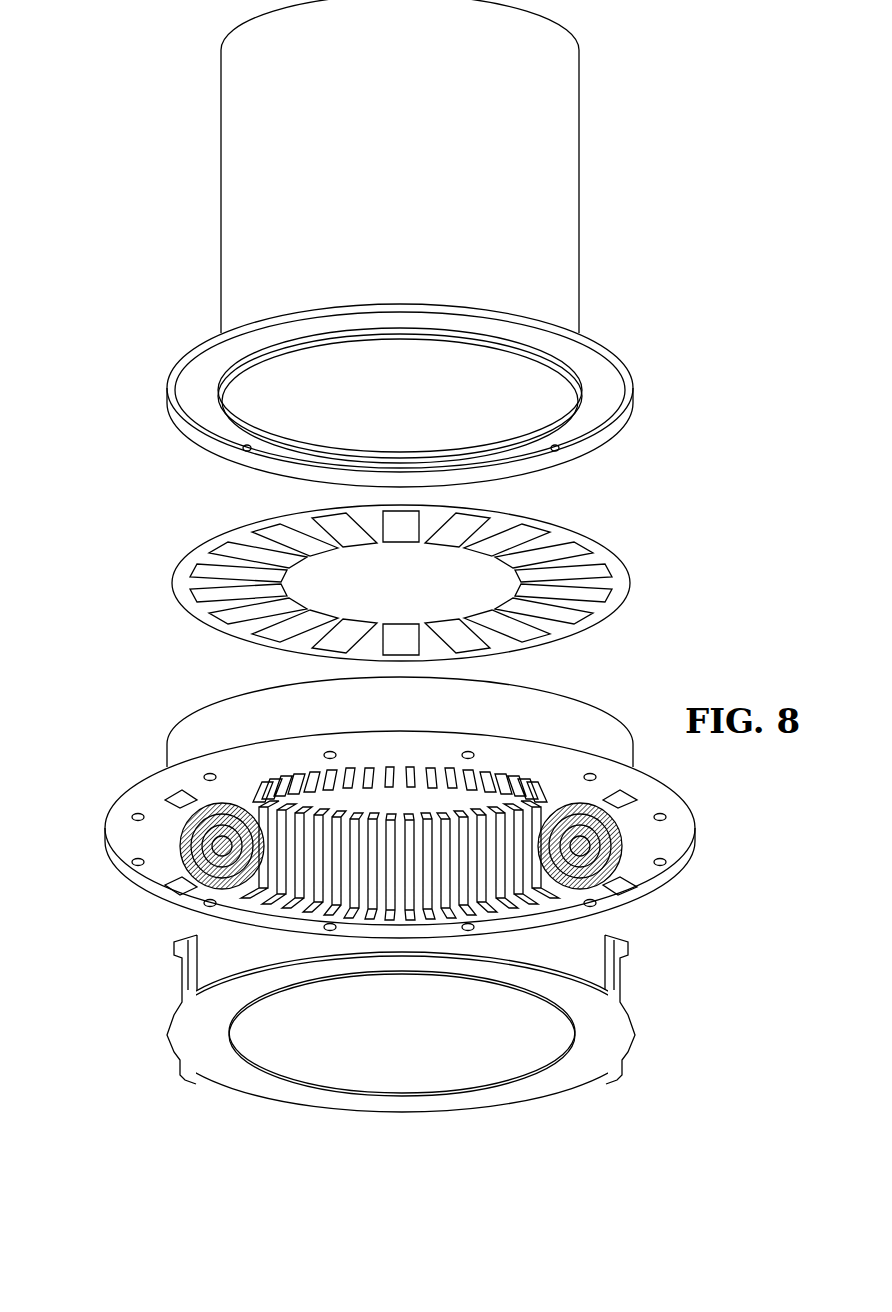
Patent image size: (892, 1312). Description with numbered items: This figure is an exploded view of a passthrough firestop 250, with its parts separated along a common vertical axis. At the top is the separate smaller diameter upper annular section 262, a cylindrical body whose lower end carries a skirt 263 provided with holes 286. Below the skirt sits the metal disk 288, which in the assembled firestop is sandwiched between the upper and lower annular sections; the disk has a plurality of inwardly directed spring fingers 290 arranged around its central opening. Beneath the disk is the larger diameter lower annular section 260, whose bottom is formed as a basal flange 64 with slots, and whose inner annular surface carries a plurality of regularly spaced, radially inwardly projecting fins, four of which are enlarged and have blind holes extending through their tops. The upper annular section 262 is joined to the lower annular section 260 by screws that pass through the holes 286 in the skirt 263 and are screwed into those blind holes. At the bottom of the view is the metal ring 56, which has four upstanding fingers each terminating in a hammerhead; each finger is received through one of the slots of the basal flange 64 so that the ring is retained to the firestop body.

The passthrough firestop 250 is at (103, 72).
The upper annular section 262 is at (247, 235).
The skirt 263 is at (193, 357).
The holes 286 is at (247, 452).
The metal disk 288 is at (197, 557).
The spring fingers 290 is at (450, 538).
The lower annular section 260 is at (190, 730).
The basal flange 64 is at (105, 828).
The metal ring 56 is at (195, 1037).